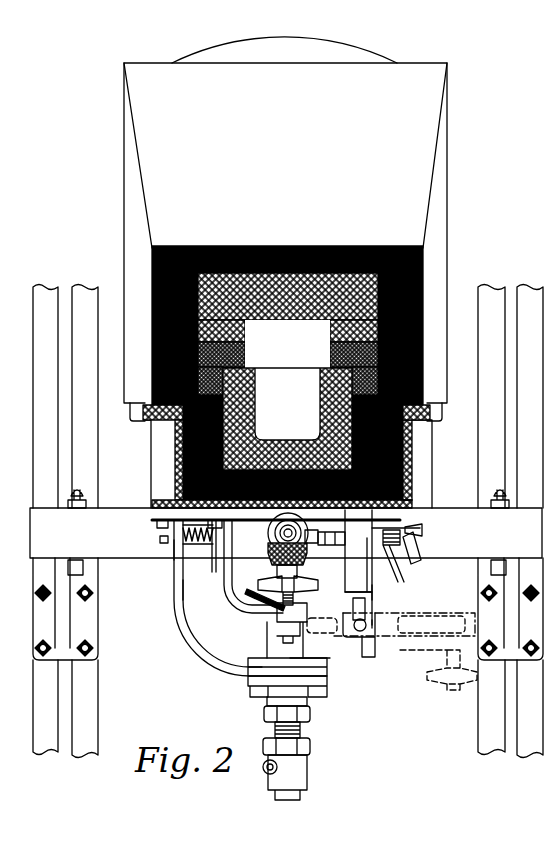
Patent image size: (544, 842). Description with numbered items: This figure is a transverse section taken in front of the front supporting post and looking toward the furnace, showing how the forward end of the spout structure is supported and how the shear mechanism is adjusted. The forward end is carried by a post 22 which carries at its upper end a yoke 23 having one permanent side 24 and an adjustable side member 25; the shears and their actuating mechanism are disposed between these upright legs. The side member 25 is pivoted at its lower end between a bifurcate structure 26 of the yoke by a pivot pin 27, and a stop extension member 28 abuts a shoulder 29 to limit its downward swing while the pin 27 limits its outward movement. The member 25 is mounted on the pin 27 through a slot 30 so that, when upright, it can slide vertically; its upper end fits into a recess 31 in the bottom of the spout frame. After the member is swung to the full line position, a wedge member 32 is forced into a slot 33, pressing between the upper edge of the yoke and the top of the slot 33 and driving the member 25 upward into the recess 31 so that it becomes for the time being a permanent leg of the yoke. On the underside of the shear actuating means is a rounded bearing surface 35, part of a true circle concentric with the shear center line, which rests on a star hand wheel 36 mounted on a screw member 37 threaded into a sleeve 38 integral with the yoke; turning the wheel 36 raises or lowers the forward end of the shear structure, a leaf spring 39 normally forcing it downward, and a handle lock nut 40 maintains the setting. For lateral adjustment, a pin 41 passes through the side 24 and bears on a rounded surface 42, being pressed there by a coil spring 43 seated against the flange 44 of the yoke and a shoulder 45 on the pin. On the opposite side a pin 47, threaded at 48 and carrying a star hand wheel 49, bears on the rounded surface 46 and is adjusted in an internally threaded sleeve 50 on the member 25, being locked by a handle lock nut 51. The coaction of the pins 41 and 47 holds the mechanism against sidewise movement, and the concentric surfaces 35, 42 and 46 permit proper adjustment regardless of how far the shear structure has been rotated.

The post 22 is at (305, 768).
The yoke 23 is at (226, 648).
The permanent side of yoke 24 is at (192, 592).
The side member 25 is at (373, 590).
The bifurcate structure 26 is at (377, 634).
The pivot pin 27 is at (372, 626).
The stop extension member 28 is at (372, 628).
The shoulder 29 is at (333, 627).
The slot 30 is at (378, 641).
The recess 31 is at (405, 507).
The wedge member 32 is at (366, 608).
The slot 33 is at (352, 598).
The rounded bearing surface 35 is at (278, 567).
The star hand wheel 36 is at (247, 585).
The screw member 37 is at (283, 642).
The sleeve 38 is at (196, 637).
The leaf spring 39 is at (400, 528).
The handle lock nut 40 is at (250, 606).
The pin 41 is at (162, 540).
The rounded surface 42 is at (275, 537).
The coil spring 43 is at (210, 543).
The flange of yoke member 44 is at (180, 547).
The shoulder 45 is at (215, 557).
The rounded surface 46 is at (331, 531).
The pin 47 is at (318, 548).
The thread 48 is at (414, 558).
The star hand wheel 49 is at (420, 553).
The internally threaded sleeve 50 is at (360, 540).
The handle lock nut 51 is at (391, 559).